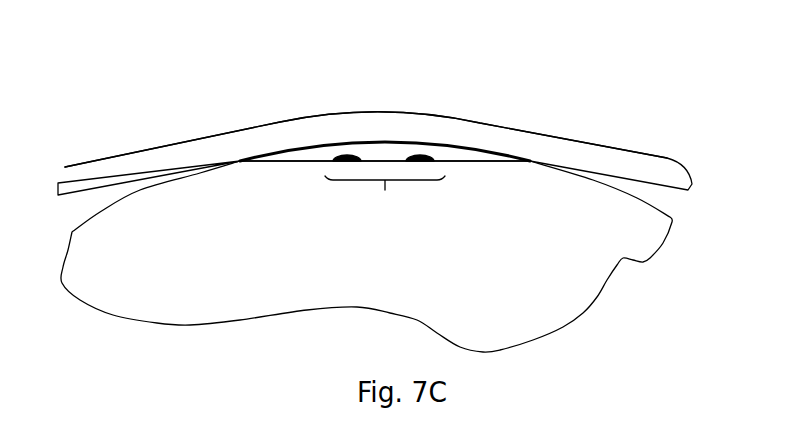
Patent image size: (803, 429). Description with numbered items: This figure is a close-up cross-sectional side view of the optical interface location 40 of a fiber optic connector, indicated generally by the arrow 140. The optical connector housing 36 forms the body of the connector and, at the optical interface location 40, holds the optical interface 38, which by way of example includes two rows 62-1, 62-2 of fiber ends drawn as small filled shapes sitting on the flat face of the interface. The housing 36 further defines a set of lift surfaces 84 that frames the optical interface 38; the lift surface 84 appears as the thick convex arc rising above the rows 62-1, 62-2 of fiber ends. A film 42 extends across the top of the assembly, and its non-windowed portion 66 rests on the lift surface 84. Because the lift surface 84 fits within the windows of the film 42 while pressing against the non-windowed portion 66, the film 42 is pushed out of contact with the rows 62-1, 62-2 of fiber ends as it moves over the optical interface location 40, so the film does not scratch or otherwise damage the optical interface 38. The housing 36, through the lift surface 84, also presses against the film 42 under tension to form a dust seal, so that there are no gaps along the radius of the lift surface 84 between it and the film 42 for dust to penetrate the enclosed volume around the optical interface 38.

The optical connector housing 36 is at (400, 298).
The optical interface 38 is at (385, 198).
The optical interface location 40 is at (301, 188).
The film 42 is at (93, 168).
The first row of fiber ends 62-1 is at (342, 157).
The second row of fiber ends 62-2 is at (417, 157).
The non-windowed film portion 66 is at (252, 135).
The lift surface 84 is at (453, 152).
The lighting assembly 140 is at (668, 90).